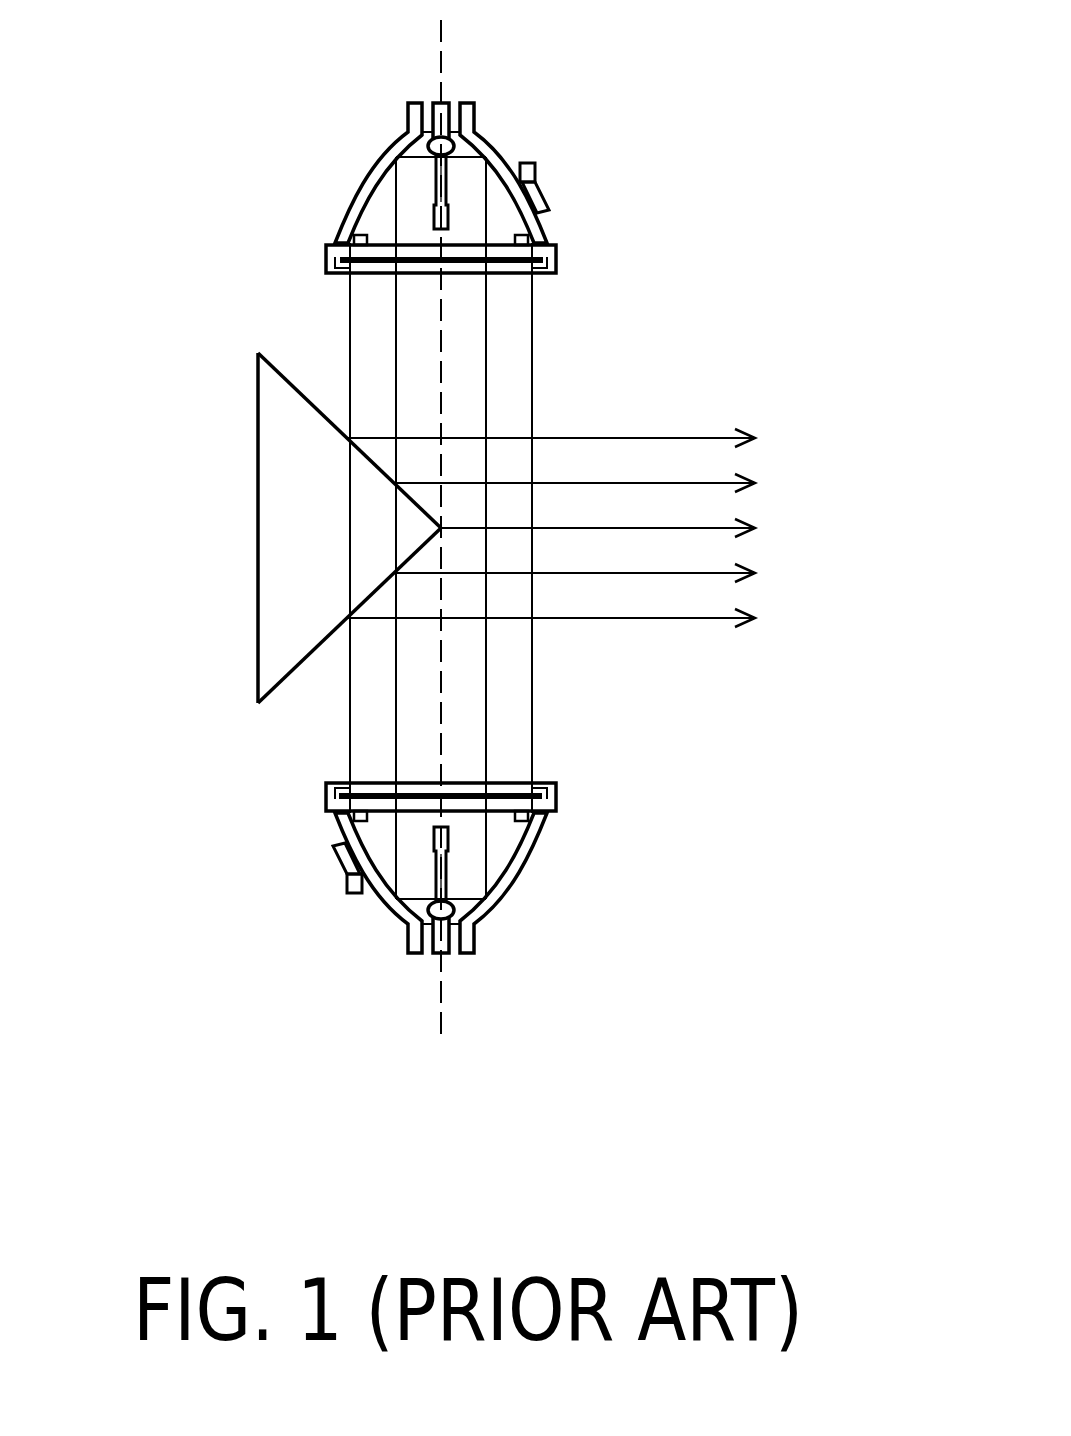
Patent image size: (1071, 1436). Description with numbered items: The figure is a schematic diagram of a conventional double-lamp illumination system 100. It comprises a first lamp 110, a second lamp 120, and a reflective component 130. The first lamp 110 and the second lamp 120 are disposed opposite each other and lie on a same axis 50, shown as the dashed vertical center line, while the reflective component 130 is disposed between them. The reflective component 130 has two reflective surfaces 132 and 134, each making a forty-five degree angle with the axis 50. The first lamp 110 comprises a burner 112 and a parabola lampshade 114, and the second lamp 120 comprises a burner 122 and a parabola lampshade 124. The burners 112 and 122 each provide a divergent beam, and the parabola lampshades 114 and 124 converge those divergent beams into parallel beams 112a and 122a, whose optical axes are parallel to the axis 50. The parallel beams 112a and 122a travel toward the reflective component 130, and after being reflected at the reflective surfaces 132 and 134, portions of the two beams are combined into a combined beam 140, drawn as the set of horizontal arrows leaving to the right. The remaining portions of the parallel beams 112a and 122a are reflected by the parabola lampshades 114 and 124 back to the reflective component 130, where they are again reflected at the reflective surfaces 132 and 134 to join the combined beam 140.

The axis 50 is at (443, 47).
The illumination system 100 is at (470, 1158).
The first lamp 110 is at (548, 304).
The burner 112 is at (449, 173).
The parallel beam 112a is at (546, 327).
The parabola lampshade 114 is at (547, 207).
The second lamp 120 is at (552, 748).
The burner 122 is at (449, 943).
The parallel beam 122a is at (556, 737).
The parabola lampshade 124 is at (526, 856).
The reflective component 130 is at (283, 516).
The reflective surface 132 is at (296, 355).
The reflective surface 134 is at (278, 684).
The combined beam 140 is at (655, 636).